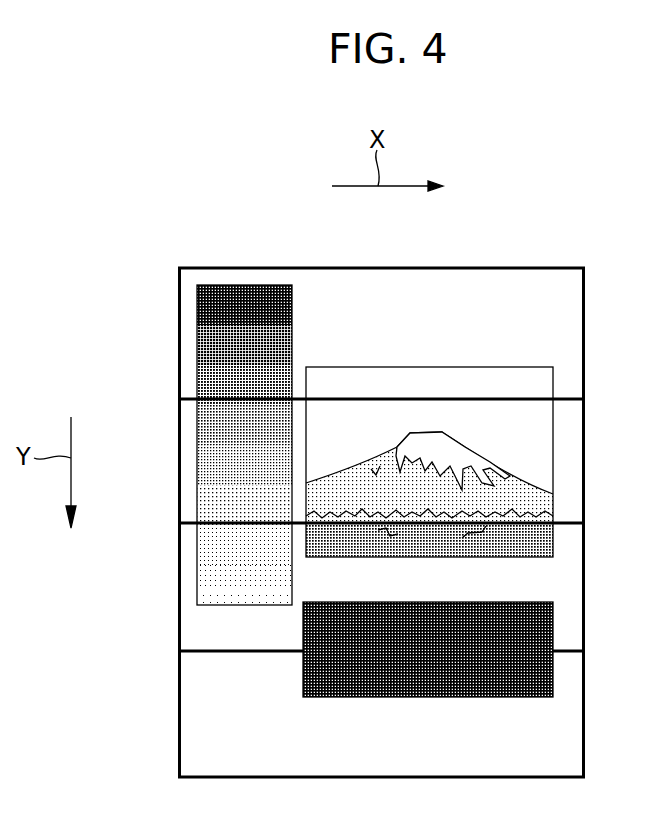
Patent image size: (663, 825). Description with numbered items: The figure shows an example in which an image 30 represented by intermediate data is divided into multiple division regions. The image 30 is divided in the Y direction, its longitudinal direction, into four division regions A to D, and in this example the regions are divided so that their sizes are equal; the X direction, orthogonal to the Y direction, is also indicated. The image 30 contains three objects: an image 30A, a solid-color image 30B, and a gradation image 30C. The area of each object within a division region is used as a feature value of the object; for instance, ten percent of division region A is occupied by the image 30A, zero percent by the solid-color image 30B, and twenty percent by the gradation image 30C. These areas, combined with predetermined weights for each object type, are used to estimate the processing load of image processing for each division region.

The image 30 is at (488, 238).
The image 30A is at (466, 365).
The solid-color image 30B is at (470, 697).
The gradation image 30C is at (294, 310).